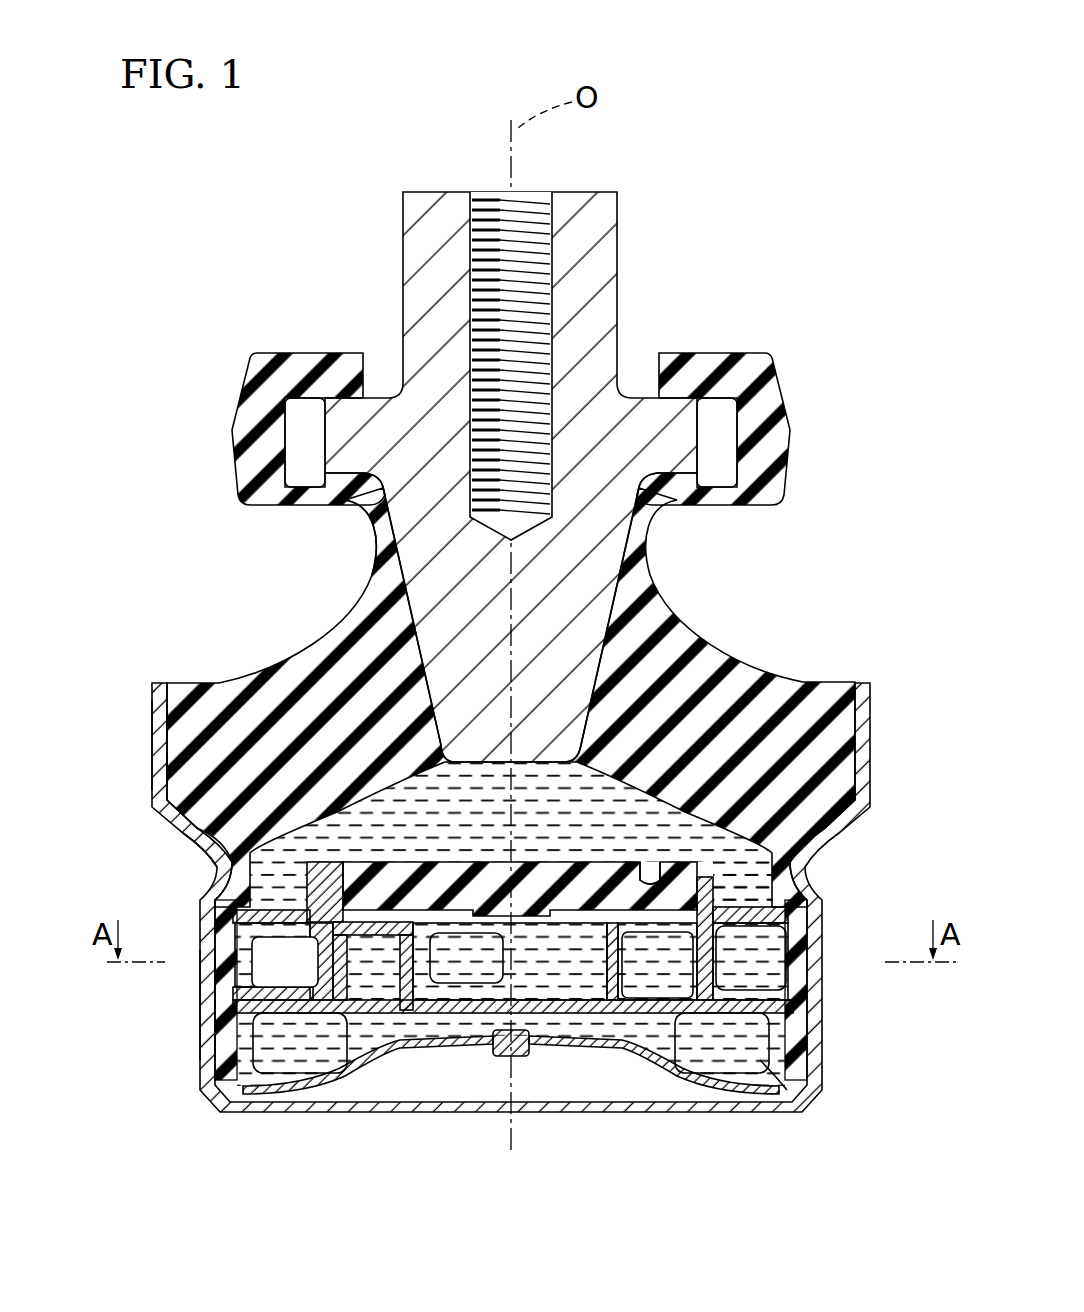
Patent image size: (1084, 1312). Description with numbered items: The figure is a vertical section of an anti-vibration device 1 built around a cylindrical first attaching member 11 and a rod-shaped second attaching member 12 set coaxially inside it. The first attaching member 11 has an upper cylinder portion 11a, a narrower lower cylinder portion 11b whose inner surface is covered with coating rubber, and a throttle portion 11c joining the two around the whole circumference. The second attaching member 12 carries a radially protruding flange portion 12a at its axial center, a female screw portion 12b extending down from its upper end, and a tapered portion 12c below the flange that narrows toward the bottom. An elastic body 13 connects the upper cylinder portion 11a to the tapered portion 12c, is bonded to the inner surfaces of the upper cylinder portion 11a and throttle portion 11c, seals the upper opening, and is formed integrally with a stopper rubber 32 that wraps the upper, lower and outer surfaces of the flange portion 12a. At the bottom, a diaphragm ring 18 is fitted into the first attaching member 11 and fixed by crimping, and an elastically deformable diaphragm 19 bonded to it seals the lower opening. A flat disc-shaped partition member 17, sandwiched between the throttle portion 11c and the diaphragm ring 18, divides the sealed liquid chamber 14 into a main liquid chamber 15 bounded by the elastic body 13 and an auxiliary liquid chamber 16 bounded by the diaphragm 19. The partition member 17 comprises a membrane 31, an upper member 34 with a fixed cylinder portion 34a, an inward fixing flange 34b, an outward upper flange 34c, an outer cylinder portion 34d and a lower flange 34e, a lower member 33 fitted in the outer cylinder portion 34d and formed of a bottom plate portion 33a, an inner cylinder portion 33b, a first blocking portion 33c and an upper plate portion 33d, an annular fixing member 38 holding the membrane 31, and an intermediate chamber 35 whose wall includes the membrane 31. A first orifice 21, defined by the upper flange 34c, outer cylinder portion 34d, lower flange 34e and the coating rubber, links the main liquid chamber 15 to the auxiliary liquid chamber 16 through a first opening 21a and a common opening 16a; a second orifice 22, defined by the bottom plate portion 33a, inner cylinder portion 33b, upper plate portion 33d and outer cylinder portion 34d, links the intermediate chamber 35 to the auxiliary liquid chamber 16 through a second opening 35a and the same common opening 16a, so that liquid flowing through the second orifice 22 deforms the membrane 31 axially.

The anti-vibration device 1 is at (860, 100).
The first attaching member 11 is at (873, 680).
The upper cylinder portion 11a is at (155, 750).
The lower cylinder portion 11b is at (202, 1012).
The throttle portion 11c is at (212, 857).
The second attaching member 12 is at (626, 184).
The flange portion 12a is at (725, 430).
The female screw portion 12b is at (490, 200).
The tapered portion 12c is at (403, 577).
The elastic body 13 is at (702, 607).
The liquid chamber 14 is at (657, 1064).
The main liquid chamber 15 is at (735, 830).
The auxiliary liquid chamber 16 is at (734, 1022).
The common opening 16a is at (340, 1018).
The partition member 17 is at (287, 1028).
The diaphragm ring 18 is at (768, 1068).
The diaphragm 19 is at (527, 1052).
The first orifice 21 is at (298, 967).
The first opening 21a is at (343, 965).
The second orifice 22 is at (673, 983).
The membrane 31 is at (558, 853).
The stopper rubber 32 is at (770, 354).
The lower member 33 is at (511, 1071).
The bottom plate portion 33a is at (695, 1012).
The inner cylinder portion 33b is at (592, 965).
The first blocking portion 33c is at (553, 990).
The upper plate portion 33d is at (343, 912).
The upper member 34 is at (584, 881).
The fixed cylinder portion 34a is at (748, 898).
The fixing flange 34b is at (778, 873).
The upper flange 34c is at (713, 975).
The outer cylinder portion 34d is at (790, 988).
The lower flange 34e is at (790, 1030).
The intermediate chamber 35 is at (573, 965).
The second opening 35a is at (470, 960).
The fixing member 38 is at (682, 852).